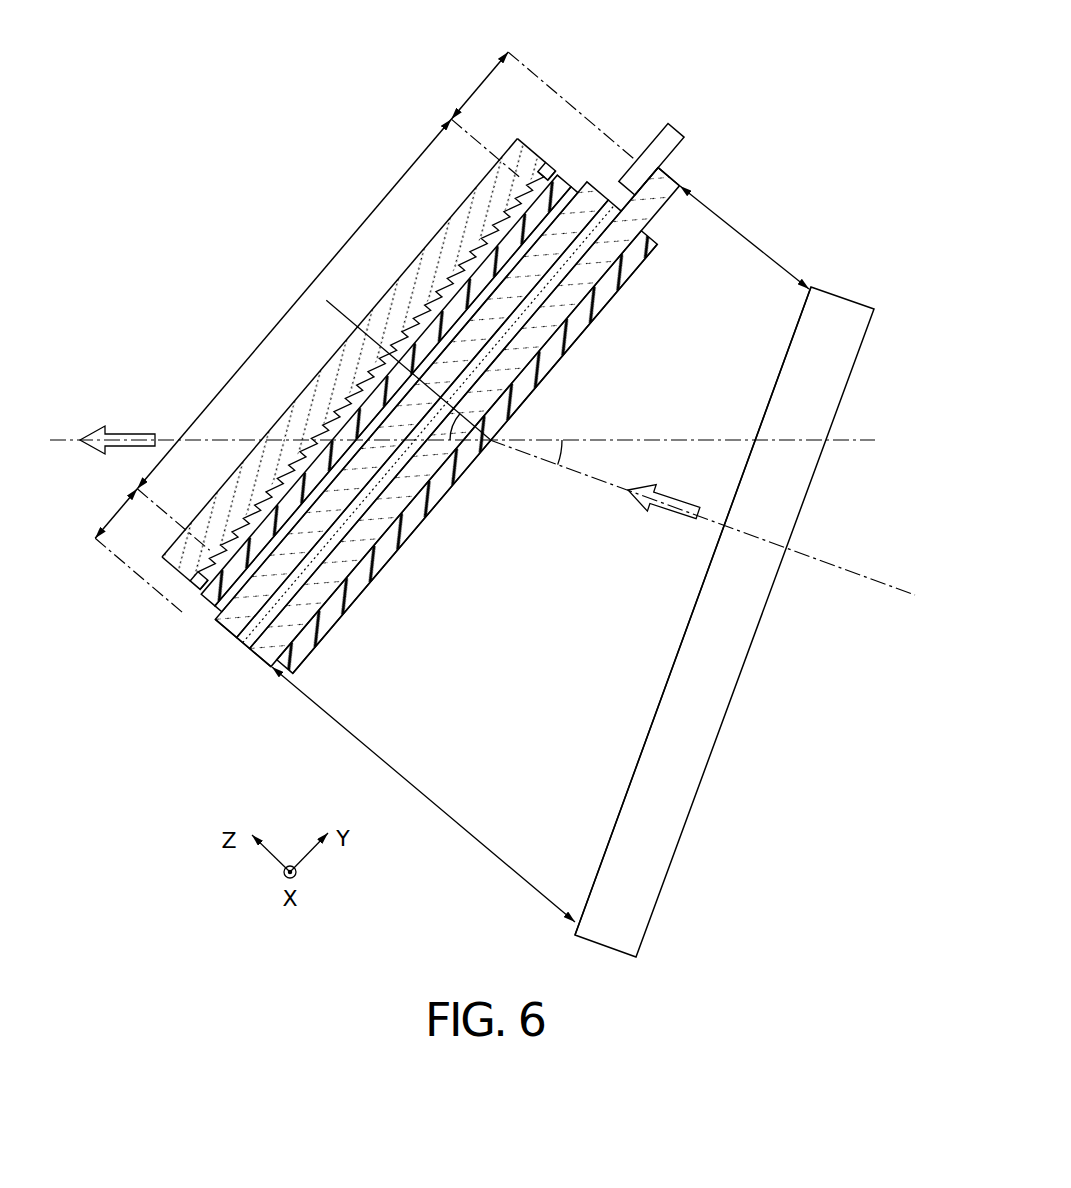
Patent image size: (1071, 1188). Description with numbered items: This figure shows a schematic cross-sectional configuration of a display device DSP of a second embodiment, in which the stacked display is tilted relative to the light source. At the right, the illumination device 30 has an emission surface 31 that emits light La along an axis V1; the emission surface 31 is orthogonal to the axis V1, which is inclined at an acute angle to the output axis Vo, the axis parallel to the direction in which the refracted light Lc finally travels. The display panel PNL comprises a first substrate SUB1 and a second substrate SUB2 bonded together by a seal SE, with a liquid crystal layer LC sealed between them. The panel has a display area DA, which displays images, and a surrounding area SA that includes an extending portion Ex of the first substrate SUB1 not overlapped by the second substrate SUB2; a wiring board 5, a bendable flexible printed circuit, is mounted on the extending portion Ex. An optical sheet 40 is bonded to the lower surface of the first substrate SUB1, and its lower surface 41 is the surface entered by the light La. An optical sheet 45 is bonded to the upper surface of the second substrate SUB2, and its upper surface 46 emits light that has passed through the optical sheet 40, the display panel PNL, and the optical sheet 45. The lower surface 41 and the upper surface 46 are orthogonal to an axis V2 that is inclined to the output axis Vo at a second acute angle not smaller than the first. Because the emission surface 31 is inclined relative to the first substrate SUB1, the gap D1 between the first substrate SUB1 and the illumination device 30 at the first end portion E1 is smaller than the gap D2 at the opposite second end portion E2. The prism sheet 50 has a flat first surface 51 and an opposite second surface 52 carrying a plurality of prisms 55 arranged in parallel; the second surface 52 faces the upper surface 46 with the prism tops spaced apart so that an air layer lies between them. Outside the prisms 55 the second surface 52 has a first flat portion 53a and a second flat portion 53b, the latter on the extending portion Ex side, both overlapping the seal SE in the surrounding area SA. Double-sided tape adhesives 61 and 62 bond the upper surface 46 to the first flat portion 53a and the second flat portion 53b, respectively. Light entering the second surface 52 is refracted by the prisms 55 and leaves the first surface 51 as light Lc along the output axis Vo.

The wiring board 5 is at (651, 160).
The illumination device 30 is at (724, 645).
The emission surface 31 is at (650, 718).
The optical sheet 40 is at (475, 458).
The lower surface 41 is at (467, 452).
The optical sheet 45 is at (386, 390).
The upper surface 46 is at (371, 374).
The prism sheet 50 is at (359, 364).
The first surface 51 is at (339, 348).
The second surface 52 is at (371, 374).
The first flat portion 53a is at (199, 581).
The second flat portion 53b is at (547, 172).
The prisms 55 is at (396, 399).
The adhesive 61 is at (204, 584).
The adhesive 62 is at (552, 175).
The display device DSP is at (724, 178).
The display panel PNL is at (447, 402).
The first substrate SUB1 is at (465, 417).
The second substrate SUB2 is at (411, 410).
The liquid crystal layer LC is at (429, 424).
The seal SE is at (429, 423).
The first end portion E1 is at (668, 177).
The second end portion E2 is at (243, 642).
The extending portion Ex is at (639, 189).
The display area DA is at (330, 334).
The surrounding area SA is at (365, 349).
The axis V1 is at (864, 569).
The axis V2 is at (408, 369).
The output axis Vo is at (857, 440).
The light La is at (680, 516).
The light Lc is at (138, 426).
The gap D1 is at (753, 245).
The gap D2 is at (445, 812).